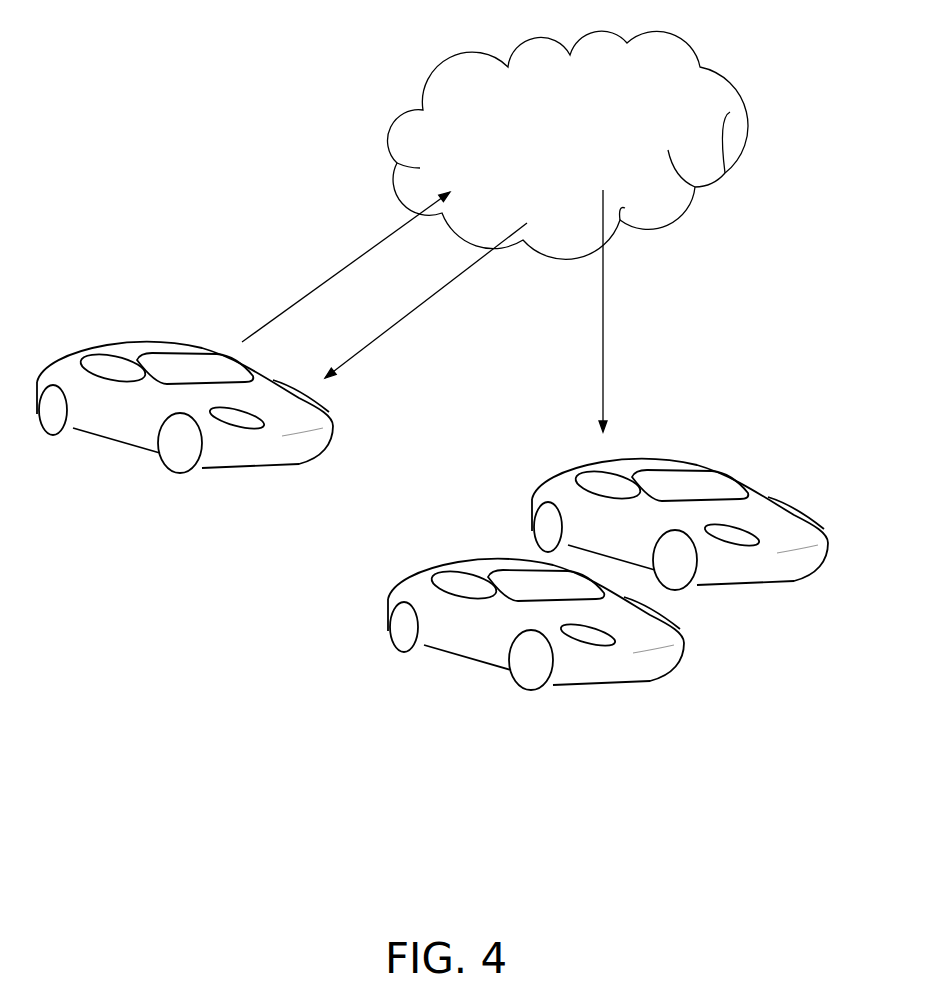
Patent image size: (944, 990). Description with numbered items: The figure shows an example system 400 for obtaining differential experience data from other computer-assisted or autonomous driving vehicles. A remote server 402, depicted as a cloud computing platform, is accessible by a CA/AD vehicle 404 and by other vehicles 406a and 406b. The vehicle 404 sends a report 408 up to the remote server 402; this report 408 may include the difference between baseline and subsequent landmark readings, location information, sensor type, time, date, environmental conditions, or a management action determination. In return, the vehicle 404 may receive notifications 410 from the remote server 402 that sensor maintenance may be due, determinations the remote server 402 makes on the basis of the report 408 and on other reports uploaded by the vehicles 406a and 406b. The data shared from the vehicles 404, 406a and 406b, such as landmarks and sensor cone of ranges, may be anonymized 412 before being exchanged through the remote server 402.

The system 400 is at (140, 652).
The remote server 402 is at (477, 78).
The CA/AD vehicle 404 is at (75, 370).
The vehicle 406a is at (417, 589).
The vehicle 406b is at (547, 493).
The report 408 is at (295, 252).
The notifications 410 is at (428, 387).
The anonymized 412 is at (743, 362).